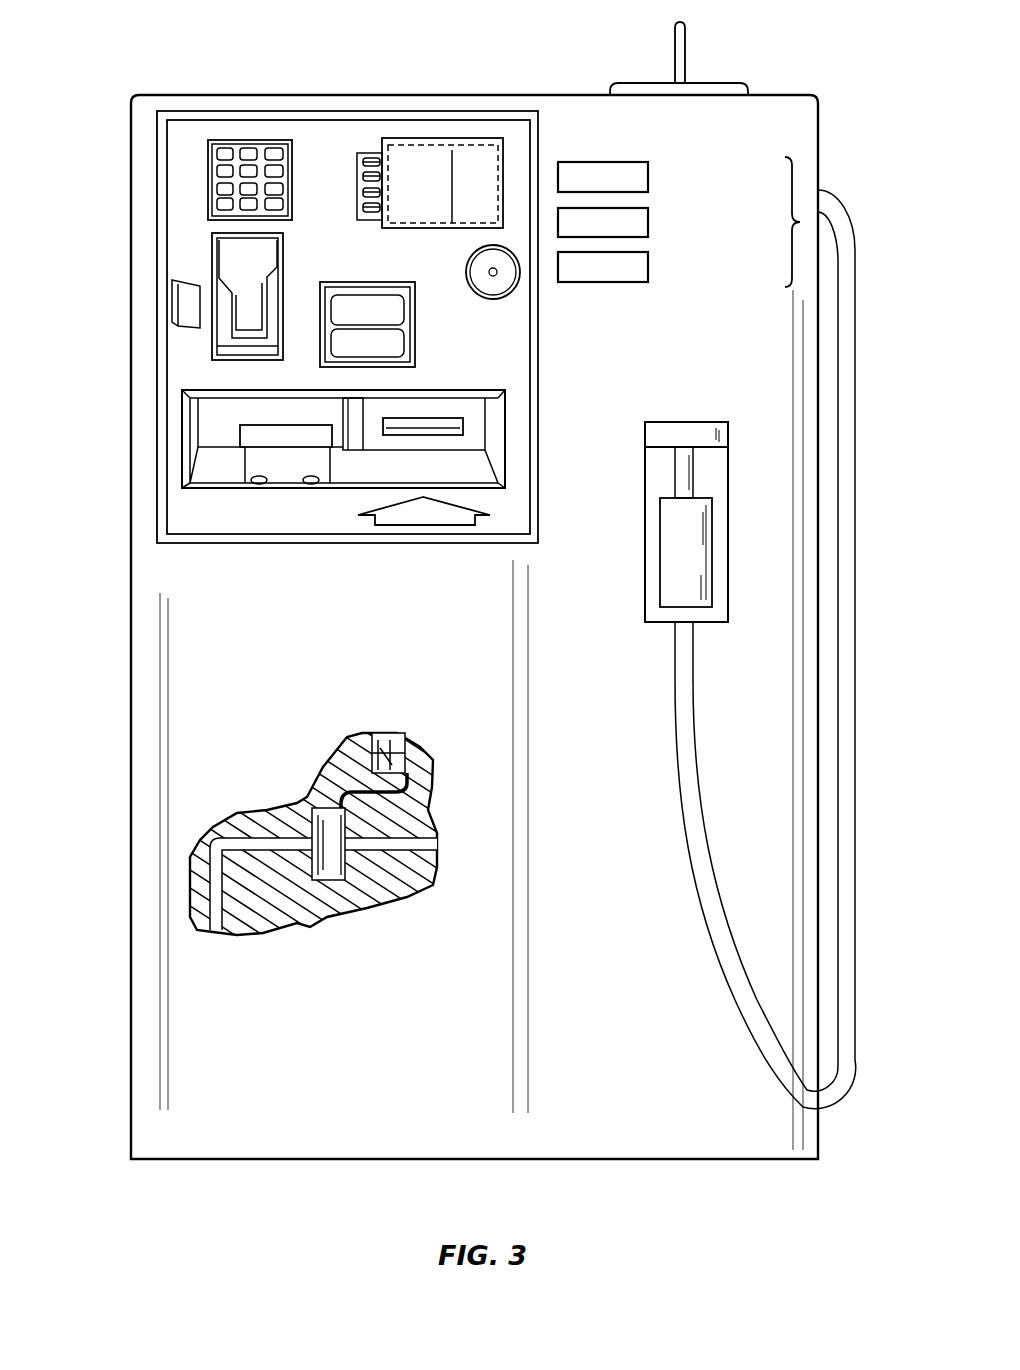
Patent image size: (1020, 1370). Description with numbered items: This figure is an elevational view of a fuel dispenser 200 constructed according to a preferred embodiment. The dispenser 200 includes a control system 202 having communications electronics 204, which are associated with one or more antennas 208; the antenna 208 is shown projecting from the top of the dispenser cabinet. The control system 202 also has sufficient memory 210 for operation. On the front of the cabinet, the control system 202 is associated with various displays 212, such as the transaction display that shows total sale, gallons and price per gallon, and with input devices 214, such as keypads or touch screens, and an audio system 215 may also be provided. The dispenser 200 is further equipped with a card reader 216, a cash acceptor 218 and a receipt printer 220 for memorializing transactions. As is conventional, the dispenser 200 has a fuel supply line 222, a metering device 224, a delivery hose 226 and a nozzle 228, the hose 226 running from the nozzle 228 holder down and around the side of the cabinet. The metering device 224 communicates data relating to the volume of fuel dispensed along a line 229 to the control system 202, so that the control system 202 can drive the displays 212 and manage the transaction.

The fuel dispenser 200 is at (540, 66).
The control system 202 is at (420, 757).
The communications electronics 204 is at (393, 741).
The antenna 208 is at (678, 62).
The memory 210 is at (380, 758).
The display 212 is at (457, 150).
The input device 214 is at (225, 152).
The audio system 215 is at (482, 262).
The card reader 216 is at (243, 262).
The cash acceptor 218 is at (247, 437).
The receipt printer 220 is at (400, 428).
The fuel supply line 222 is at (216, 858).
The metering device 224 is at (335, 837).
The delivery hose 226 is at (823, 1097).
The nozzle 228 is at (690, 570).
The line 229 is at (383, 787).